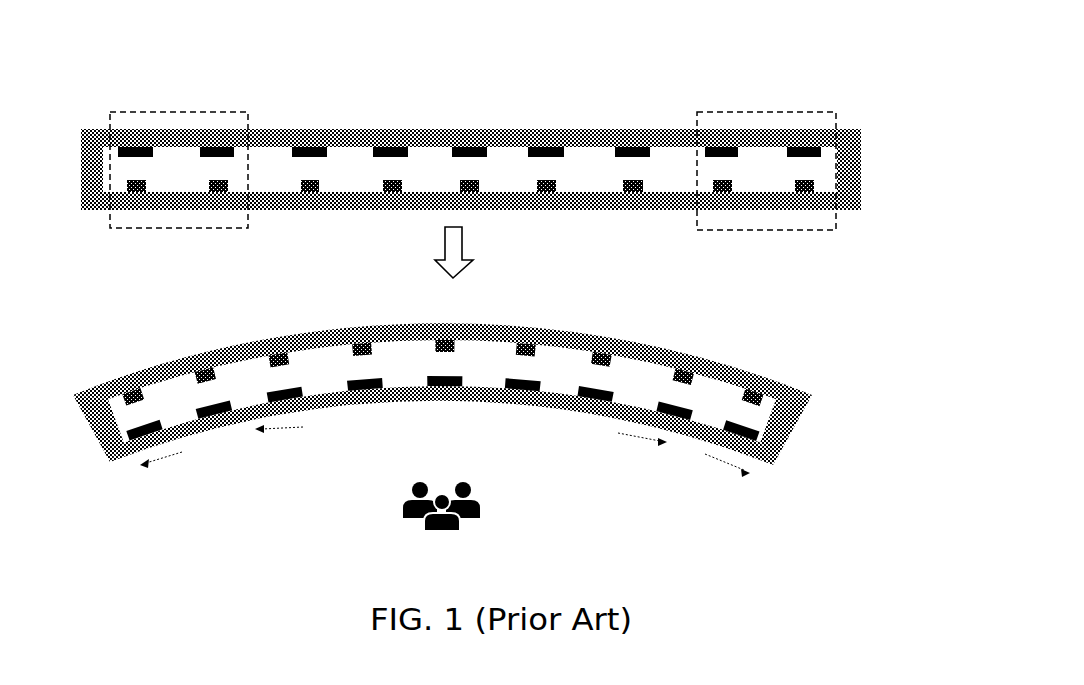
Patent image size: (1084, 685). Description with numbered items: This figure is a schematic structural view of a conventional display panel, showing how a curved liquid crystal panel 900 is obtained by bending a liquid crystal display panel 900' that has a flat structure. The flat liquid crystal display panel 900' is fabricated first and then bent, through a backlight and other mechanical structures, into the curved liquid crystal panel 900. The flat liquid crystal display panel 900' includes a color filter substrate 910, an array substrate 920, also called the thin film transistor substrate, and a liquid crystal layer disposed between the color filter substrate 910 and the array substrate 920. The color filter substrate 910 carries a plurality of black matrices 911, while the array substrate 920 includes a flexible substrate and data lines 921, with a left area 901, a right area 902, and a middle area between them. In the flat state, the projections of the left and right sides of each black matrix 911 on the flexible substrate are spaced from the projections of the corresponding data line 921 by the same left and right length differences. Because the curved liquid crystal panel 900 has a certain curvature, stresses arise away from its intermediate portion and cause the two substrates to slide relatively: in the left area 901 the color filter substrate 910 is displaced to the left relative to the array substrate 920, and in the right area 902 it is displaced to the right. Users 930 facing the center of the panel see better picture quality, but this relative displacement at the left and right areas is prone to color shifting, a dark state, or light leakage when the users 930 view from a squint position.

The flat liquid crystal display panel 900' is at (471, 127).
The curved liquid crystal panel 900 is at (443, 370).
The left area 901 is at (204, 112).
The right area 902 is at (755, 115).
The color filter substrate 910 is at (862, 137).
The black matrix 911 is at (570, 127).
The array substrate 920 is at (862, 200).
The data line 921 is at (532, 210).
The viewers 930 is at (472, 502).